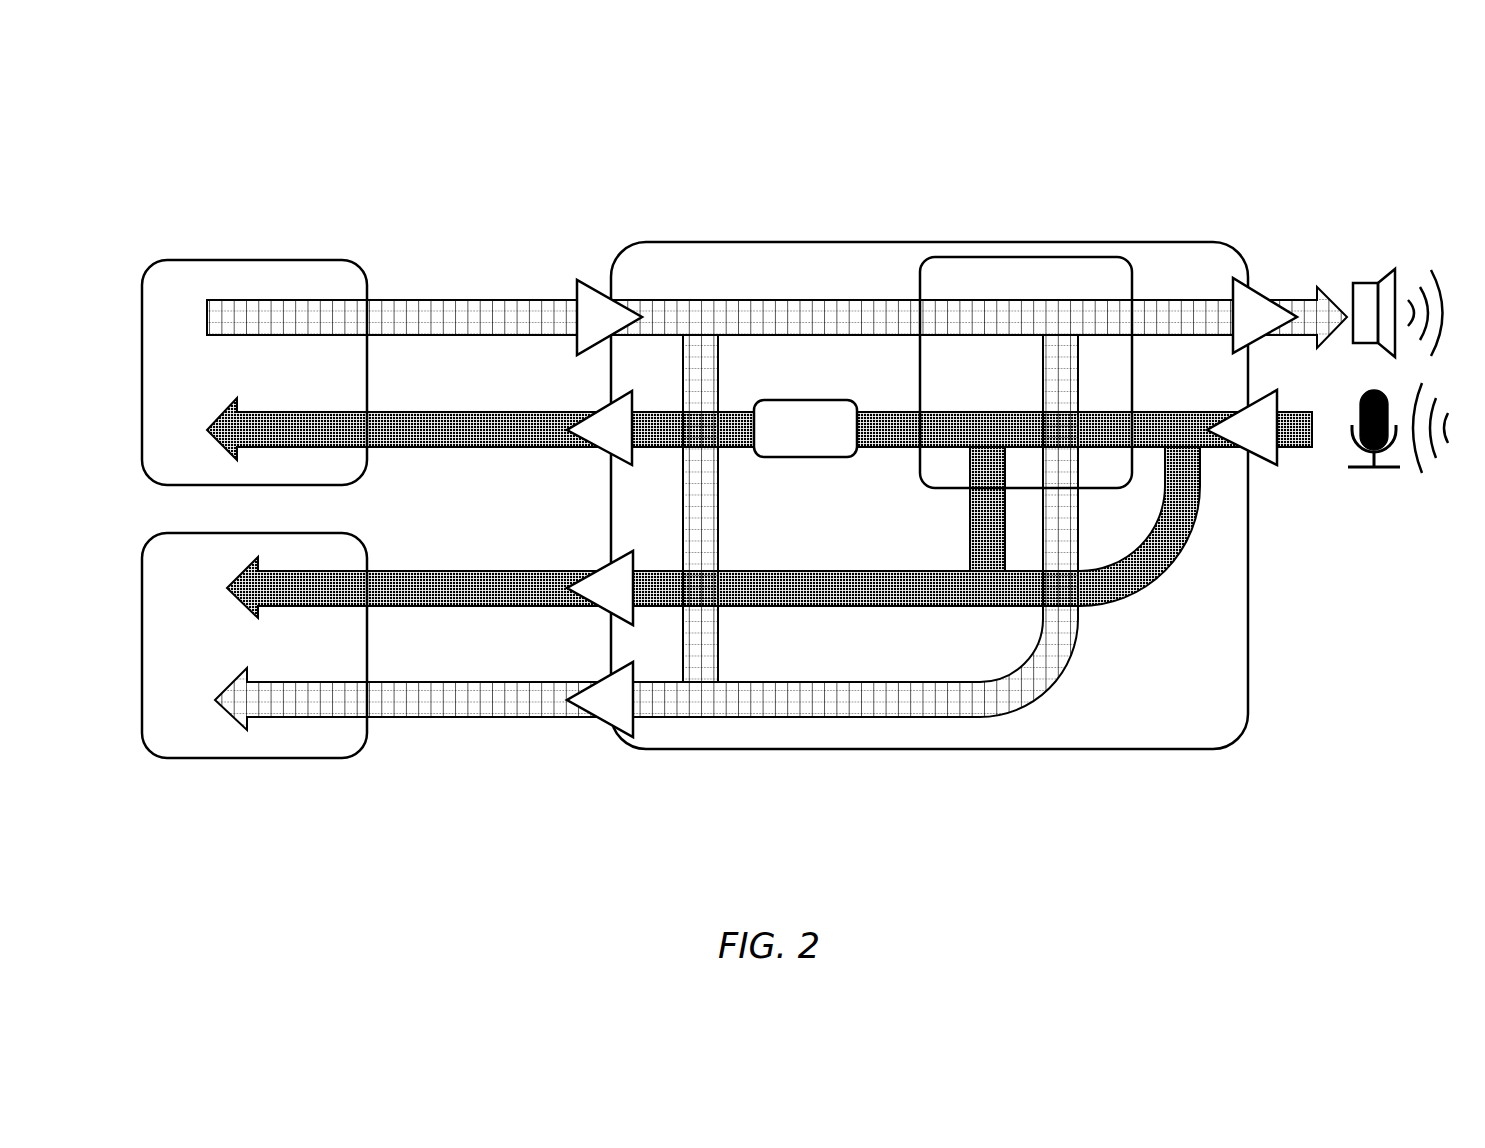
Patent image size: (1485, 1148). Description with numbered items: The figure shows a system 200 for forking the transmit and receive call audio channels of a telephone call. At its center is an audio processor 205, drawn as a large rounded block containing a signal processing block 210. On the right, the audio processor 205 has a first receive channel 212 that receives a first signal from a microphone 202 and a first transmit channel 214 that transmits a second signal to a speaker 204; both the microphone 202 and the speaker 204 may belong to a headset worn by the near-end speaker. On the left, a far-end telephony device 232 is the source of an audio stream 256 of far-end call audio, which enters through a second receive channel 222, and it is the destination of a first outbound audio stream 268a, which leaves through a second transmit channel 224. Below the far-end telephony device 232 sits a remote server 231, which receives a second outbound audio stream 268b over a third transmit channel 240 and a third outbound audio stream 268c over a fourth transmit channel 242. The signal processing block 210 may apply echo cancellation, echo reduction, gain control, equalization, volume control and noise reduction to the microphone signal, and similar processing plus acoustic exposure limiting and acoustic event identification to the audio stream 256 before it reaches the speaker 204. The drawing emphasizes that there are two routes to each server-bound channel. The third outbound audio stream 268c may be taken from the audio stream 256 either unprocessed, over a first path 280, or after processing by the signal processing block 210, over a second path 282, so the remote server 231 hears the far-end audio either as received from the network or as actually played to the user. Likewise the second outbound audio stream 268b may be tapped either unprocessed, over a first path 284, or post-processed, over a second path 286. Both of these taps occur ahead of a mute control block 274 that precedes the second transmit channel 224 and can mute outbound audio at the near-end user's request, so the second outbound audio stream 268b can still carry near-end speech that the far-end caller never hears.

The system 200 is at (132, 112).
The microphone 202 is at (1372, 468).
The speaker 204 is at (1376, 345).
The audio processor 205 is at (896, 242).
The signal processing block 210 is at (1132, 258).
The first receive channel 212 is at (1275, 392).
The first transmit channel 214 is at (1243, 344).
The second receive channel 222 is at (580, 291).
The second transmit channel 224 is at (613, 456).
The remote server 231 is at (364, 758).
The far-end telephony device 232 is at (143, 263).
The third transmit channel 240 is at (607, 566).
The fourth transmit channel 242 is at (603, 719).
The audio stream 256 is at (402, 300).
The first outbound audio stream 268a is at (420, 448).
The second outbound audio stream 268b is at (443, 570).
The third outbound audio stream 268c is at (472, 682).
The mute control block 274 is at (800, 401).
The first path 280 is at (672, 525).
The second path 282 is at (995, 658).
The first path 284 is at (1145, 534).
The second path 286 is at (958, 537).